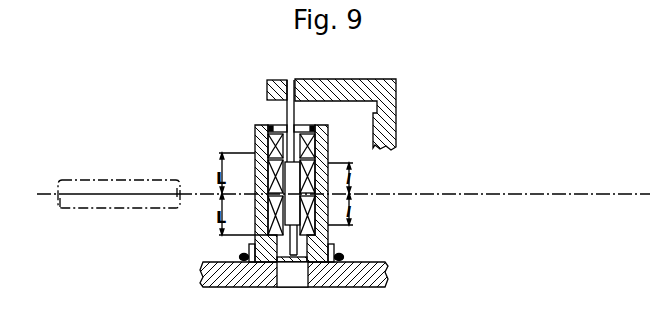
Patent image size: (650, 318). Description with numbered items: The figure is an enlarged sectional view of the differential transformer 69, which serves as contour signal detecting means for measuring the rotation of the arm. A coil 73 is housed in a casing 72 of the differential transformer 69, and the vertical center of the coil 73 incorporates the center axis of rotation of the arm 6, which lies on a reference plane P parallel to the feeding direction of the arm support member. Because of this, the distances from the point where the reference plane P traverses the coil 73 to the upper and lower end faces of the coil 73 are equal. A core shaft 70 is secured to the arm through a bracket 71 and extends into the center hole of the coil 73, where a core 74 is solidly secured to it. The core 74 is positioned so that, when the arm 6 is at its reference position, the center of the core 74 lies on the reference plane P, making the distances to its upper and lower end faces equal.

The arm 6 is at (137, 180).
The reference plane P is at (47, 193).
The differential transformer 69 is at (256, 126).
The core shaft 70 is at (285, 113).
The bracket 71 is at (359, 84).
The casing 72 is at (254, 146).
The coil 73 is at (316, 152).
The core 74 is at (299, 162).